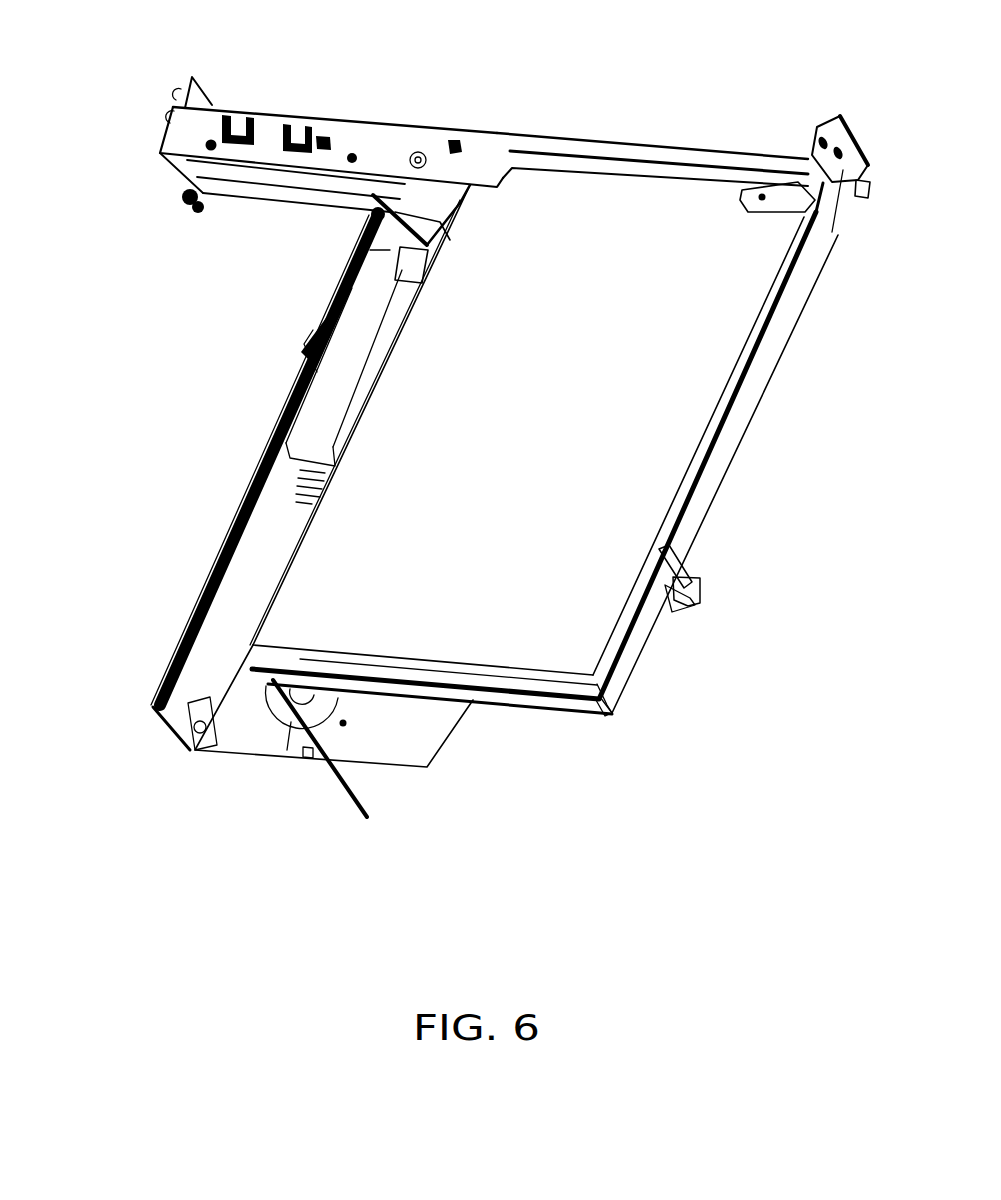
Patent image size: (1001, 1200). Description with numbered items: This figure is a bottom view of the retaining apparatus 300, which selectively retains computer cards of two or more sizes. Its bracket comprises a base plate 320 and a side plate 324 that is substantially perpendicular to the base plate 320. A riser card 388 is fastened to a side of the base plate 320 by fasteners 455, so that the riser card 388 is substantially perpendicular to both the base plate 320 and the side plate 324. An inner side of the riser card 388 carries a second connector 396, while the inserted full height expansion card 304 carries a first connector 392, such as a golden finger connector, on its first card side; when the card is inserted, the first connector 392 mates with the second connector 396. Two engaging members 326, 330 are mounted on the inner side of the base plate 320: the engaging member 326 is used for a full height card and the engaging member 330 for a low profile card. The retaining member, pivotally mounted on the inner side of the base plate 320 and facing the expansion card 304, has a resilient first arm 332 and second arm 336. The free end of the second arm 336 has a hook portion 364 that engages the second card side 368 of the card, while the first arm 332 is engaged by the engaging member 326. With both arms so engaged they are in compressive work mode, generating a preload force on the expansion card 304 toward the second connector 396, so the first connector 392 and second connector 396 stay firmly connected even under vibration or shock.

The retaining apparatus 300 is at (677, 148).
The side plate 324 is at (400, 126).
The riser card 388 is at (387, 250).
The second connector 396 is at (370, 295).
The first connector 392 is at (404, 307).
The second card side 368 is at (748, 400).
The hook portion 364 is at (687, 568).
The second arm 336 is at (673, 612).
The full height expansion card 304 is at (598, 716).
The base plate 320 is at (413, 727).
The fasteners 455 is at (190, 748).
The engaging member 326 is at (300, 758).
The first arm 332 is at (345, 788).
The engaging member 330 is at (345, 725).